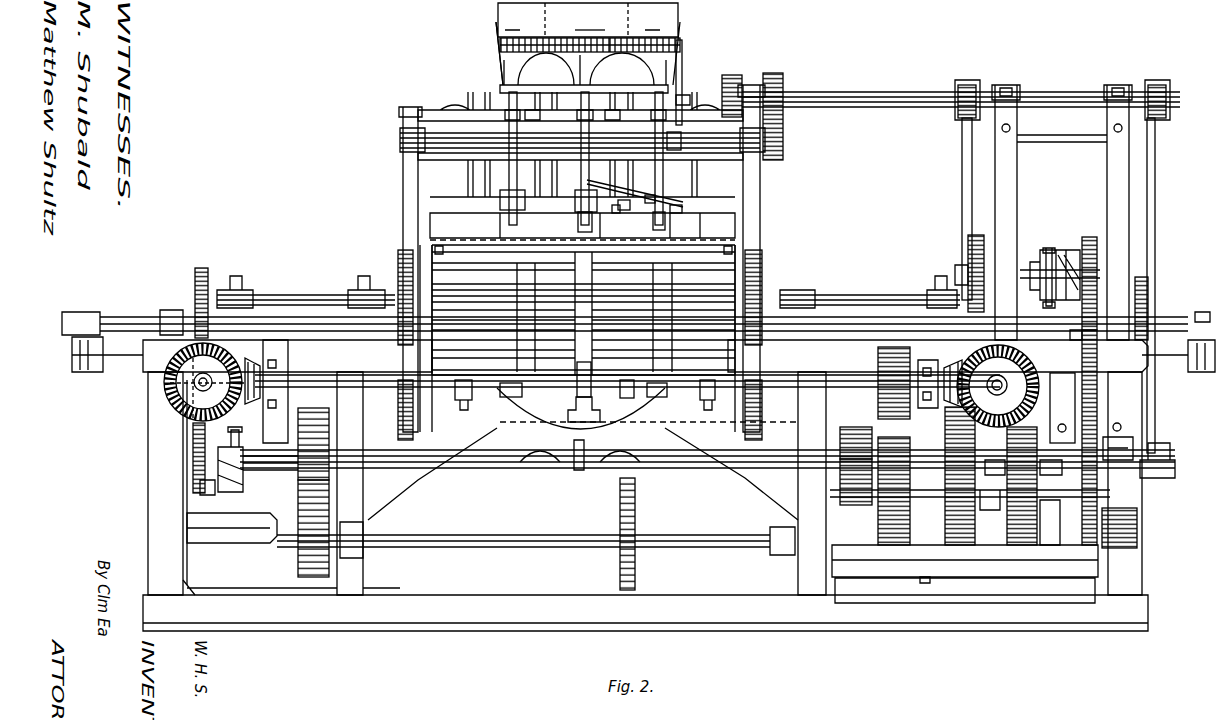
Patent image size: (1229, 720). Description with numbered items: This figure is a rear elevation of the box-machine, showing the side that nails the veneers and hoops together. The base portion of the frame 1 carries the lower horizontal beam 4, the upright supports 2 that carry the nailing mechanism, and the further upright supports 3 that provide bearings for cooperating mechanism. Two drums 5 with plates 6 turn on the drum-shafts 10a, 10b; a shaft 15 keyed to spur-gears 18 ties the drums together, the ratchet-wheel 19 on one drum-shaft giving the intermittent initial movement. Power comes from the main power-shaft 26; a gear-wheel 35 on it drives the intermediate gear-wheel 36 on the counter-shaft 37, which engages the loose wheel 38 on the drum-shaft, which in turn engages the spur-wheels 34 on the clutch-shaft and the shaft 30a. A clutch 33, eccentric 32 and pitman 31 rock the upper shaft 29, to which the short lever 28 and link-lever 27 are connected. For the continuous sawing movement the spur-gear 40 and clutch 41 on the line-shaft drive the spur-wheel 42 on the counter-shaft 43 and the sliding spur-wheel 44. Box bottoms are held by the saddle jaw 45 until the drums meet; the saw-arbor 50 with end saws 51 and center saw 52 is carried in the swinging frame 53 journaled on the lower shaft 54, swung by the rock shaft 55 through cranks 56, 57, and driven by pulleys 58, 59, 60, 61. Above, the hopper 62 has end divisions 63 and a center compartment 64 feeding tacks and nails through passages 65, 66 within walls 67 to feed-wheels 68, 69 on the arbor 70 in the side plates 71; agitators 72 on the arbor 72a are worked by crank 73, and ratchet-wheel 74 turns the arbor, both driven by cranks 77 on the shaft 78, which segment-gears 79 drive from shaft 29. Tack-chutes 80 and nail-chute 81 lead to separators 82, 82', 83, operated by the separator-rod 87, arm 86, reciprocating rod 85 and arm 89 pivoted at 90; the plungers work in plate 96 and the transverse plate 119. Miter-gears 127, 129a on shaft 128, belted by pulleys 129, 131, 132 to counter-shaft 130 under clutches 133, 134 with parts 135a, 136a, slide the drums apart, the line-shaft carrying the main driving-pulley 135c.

The base portion of the frame 1 is at (638, 471).
The upright supports 2 is at (402, 207).
The upright supports 3 is at (1062, 212).
The lower horizontal beam 4 is at (707, 428).
The cylinders or drums 5 is at (583, 310).
The drum plates 6 is at (583, 251).
The drum-shaft 10a is at (431, 337).
The drum-shaft 10b is at (867, 332).
The shaft 15 is at (305, 295).
The spur-gears 18 is at (398, 268).
The ratchet-wheel 19 is at (1148, 294).
The main power-shaft 26 is at (1062, 468).
The link-lever 27 is at (1150, 233).
The short lever 28 is at (1166, 88).
The upper shaft 29 is at (910, 100).
The shaft 30a is at (1040, 268).
The pitman 31 is at (965, 175).
The eccentric 32 is at (966, 240).
The clutch 33 is at (1058, 248).
The spur-wheel 34 is at (1090, 236).
The gear-wheel 35 is at (1097, 438).
The intermediate gear-wheel 36 is at (1097, 392).
The counter-shaft 37 is at (1080, 412).
The wheel 38 is at (1080, 335).
The spur-gear 40 is at (202, 496).
The clutch 41 is at (232, 492).
The spur-wheel 42 is at (193, 400).
The counter-shaft 43 is at (600, 392).
The spur-wheel 44 is at (195, 285).
The jaw 45 is at (560, 408).
The saw-arbor 50 is at (505, 397).
The end saws 51 is at (457, 402).
The center saw 52 is at (591, 396).
The swinging frame 53 is at (583, 474).
The lower shaft 54 is at (510, 535).
The rock shaft 55 is at (660, 470).
The crank 56 is at (560, 470).
The crank 57 is at (845, 427).
The pulley 58 is at (313, 435).
The pulley 59 is at (298, 557).
The pulley 60 is at (620, 517).
The pulley 61 is at (628, 378).
The hopper 62 is at (497, 28).
The end divisions 63 is at (583, 20).
The center compartment 64 is at (590, 20).
The passages 65 is at (583, 69).
The center passage 66 is at (586, 69).
The walls 67 is at (586, 69).
The feed-wheels 68 is at (505, 117).
The feed-wheel 69 is at (582, 117).
The arbor 70 is at (570, 122).
The side plates 71 is at (498, 68).
The fingers or agitators 72 is at (560, 40).
The arbor 72a is at (618, 40).
The crank 73 is at (683, 72).
The ratchet-wheel 74 is at (680, 97).
The cranks 77 is at (681, 134).
The shaft 78 is at (458, 130).
The segment-gears 79 is at (731, 75).
The tack-chutes 80 is at (509, 183).
The nail-chute 81 is at (581, 177).
The separator 82 is at (504, 202).
The separator 82' is at (642, 186).
The separator 83 is at (575, 200).
The reciprocating rod 85 is at (665, 222).
The arm 86 is at (625, 212).
The separator-rod 87 is at (573, 226).
The arm 89 is at (606, 177).
The pivot 90 is at (688, 214).
The plate 96 is at (582, 218).
The transverse plate 119 is at (455, 125).
The miter-gear 127 is at (601, 385).
The shaft 128 is at (400, 392).
The pulley 129 is at (810, 392).
The miter-gear 129a is at (255, 362).
The counter-shaft 130 is at (902, 420).
The pulley 131 is at (1030, 547).
The pulley 132 is at (965, 577).
The clutch 133 is at (1047, 506).
The clutch 134 is at (992, 512).
The gear 135a is at (1060, 538).
The main driving-pulley 135c is at (855, 506).
The gear 136a is at (1000, 542).